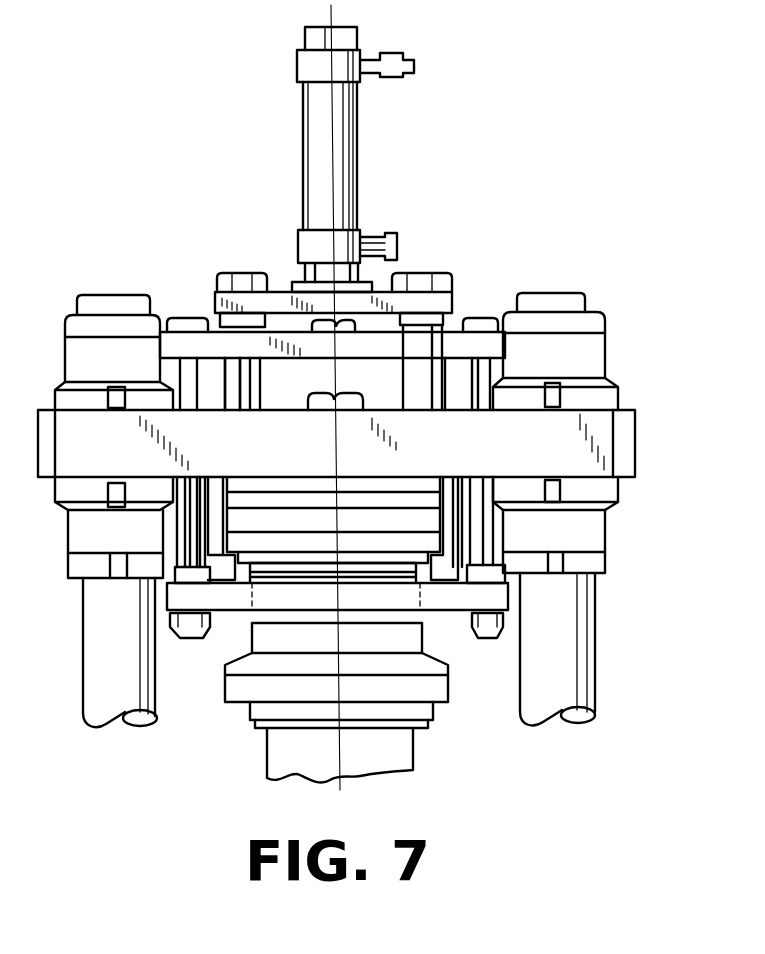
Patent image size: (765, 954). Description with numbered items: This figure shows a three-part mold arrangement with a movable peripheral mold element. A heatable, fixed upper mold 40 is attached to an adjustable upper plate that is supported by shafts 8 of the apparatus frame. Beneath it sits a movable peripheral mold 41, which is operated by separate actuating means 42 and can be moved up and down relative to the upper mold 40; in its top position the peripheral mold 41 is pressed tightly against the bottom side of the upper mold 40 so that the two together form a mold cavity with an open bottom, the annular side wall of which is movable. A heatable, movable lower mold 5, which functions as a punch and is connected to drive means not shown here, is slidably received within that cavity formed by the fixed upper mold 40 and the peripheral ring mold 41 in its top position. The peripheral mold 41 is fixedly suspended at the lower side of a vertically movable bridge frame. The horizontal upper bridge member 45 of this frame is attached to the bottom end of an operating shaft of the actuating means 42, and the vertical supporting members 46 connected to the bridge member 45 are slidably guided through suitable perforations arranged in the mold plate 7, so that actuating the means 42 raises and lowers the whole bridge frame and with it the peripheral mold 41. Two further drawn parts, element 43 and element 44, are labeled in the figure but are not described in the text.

The lower mold 5 is at (444, 667).
The mold plate 7 is at (626, 443).
The shafts 8 is at (565, 672).
The upper mold 40 is at (438, 540).
The peripheral mold 41 is at (464, 593).
The actuating means 42 is at (337, 139).
The upper plate 43 is at (445, 300).
The tie rod 44 is at (233, 379).
The upper bridge member 45 is at (463, 345).
The vertical supporting members 46 is at (496, 371).